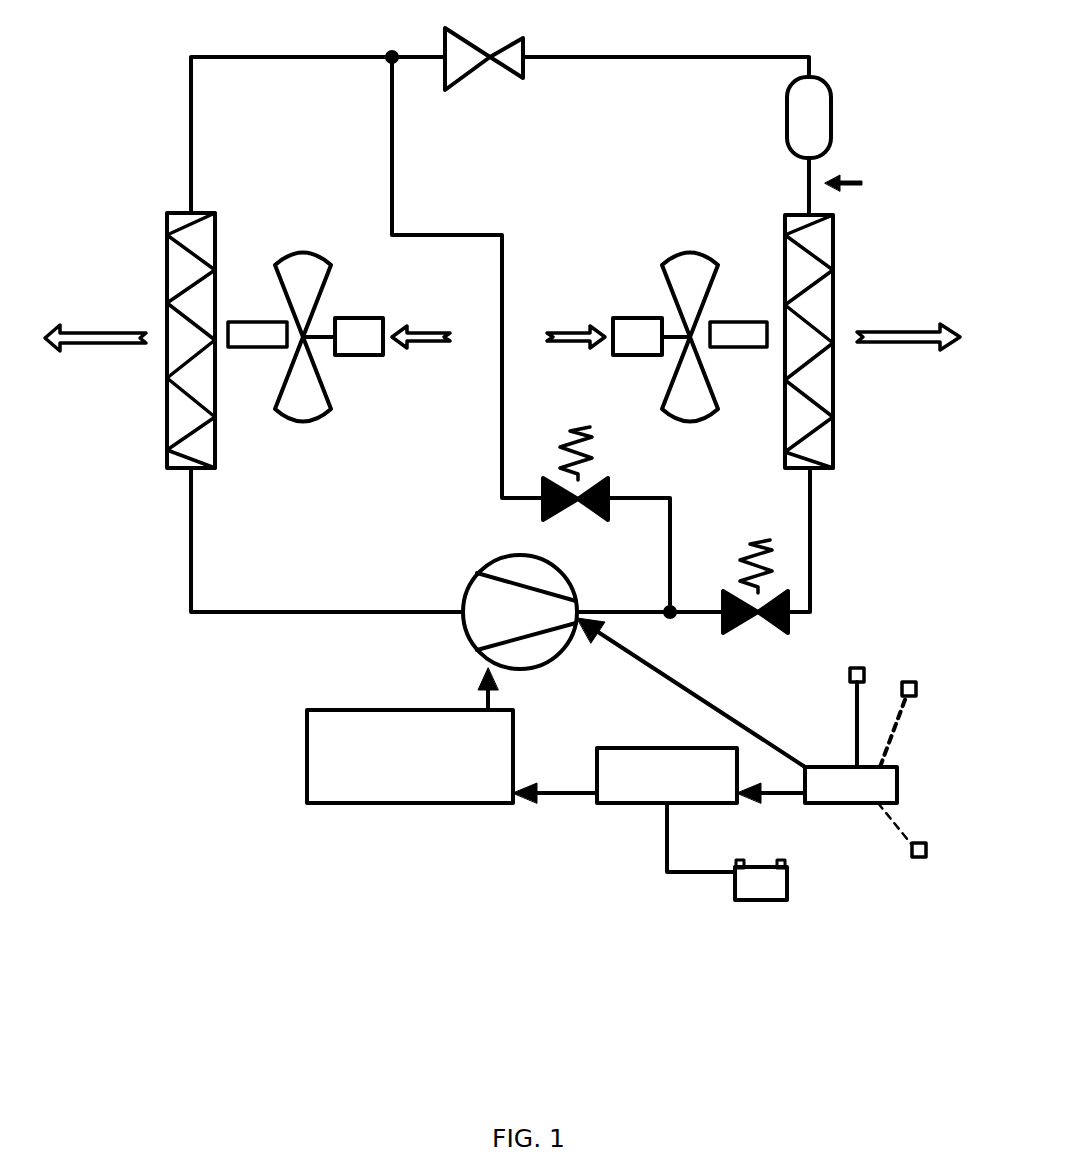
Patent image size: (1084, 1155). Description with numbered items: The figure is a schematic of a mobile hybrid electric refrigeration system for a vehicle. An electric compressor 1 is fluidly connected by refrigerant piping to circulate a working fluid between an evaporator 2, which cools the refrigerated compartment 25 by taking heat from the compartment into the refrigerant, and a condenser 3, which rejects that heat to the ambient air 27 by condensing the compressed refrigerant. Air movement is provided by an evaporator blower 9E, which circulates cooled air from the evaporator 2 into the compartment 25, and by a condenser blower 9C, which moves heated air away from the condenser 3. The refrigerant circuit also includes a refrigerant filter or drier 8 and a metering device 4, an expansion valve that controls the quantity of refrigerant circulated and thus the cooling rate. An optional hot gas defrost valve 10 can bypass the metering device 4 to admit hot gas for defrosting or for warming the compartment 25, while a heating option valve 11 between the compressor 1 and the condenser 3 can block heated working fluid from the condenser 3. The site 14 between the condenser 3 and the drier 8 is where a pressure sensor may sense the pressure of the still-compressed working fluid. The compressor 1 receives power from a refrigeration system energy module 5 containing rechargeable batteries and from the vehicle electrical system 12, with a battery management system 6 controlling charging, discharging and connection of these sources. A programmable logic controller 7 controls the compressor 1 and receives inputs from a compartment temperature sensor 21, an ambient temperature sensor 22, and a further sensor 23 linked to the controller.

The electric compressor 1 is at (517, 605).
The evaporator 2 is at (212, 340).
The condenser 3 is at (793, 341).
The metering device 4 is at (484, 48).
The refrigeration system energy module 5 is at (410, 734).
The battery management system 6 is at (625, 794).
The programmable logic controller 7 is at (737, 710).
The refrigerant filter or drier 8 is at (823, 111).
The evaporator blower 9E is at (339, 337).
The condenser blower 9C is at (657, 337).
The hot gas defrost valve 10 is at (566, 473).
The heating option valve 11 is at (746, 586).
The vehicle electrical system 12 is at (747, 881).
The pressure sensor site 14 is at (862, 188).
The refrigerated compartment temperature sensor 21 is at (844, 706).
The ambient temperature sensor 22 is at (904, 711).
The sensor 23 is at (919, 842).
The refrigerated compartment 25 is at (95, 351).
The ambient air 27 is at (908, 329).